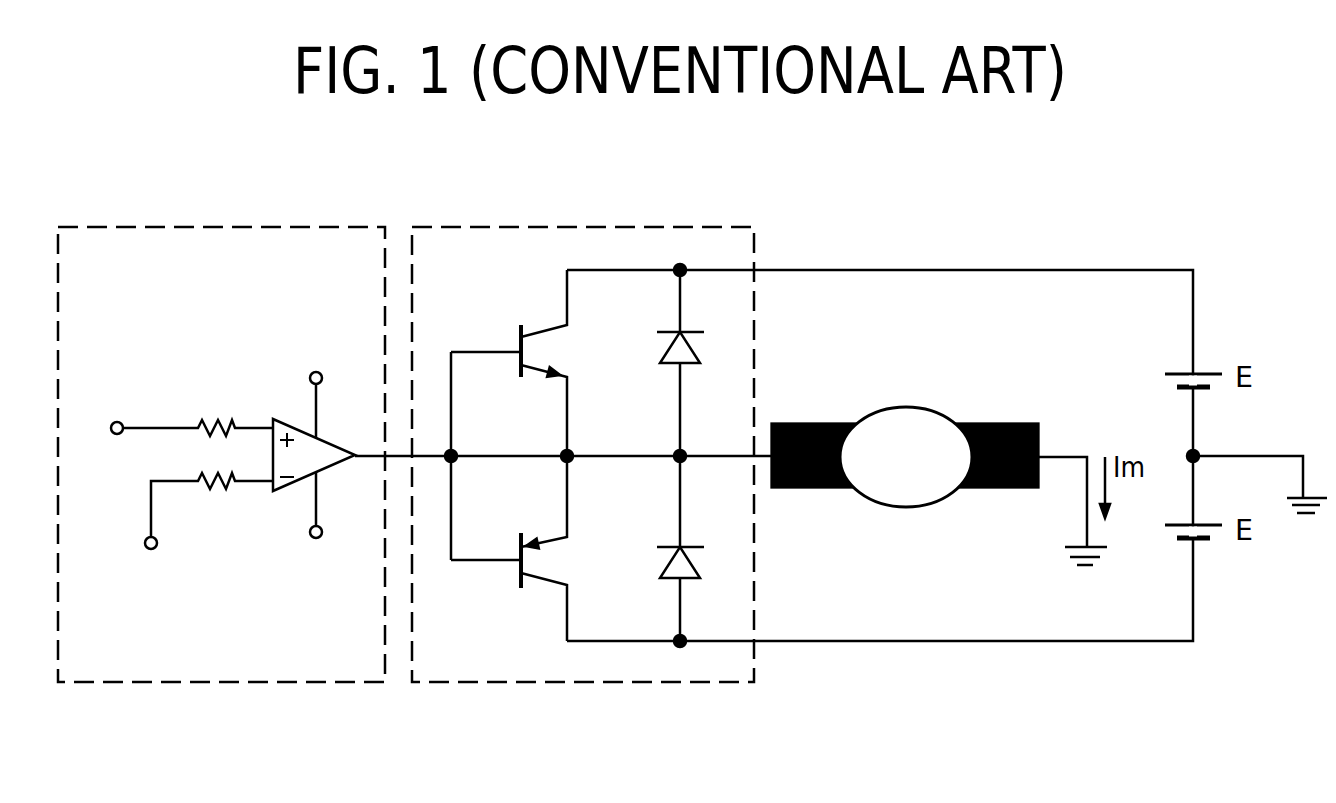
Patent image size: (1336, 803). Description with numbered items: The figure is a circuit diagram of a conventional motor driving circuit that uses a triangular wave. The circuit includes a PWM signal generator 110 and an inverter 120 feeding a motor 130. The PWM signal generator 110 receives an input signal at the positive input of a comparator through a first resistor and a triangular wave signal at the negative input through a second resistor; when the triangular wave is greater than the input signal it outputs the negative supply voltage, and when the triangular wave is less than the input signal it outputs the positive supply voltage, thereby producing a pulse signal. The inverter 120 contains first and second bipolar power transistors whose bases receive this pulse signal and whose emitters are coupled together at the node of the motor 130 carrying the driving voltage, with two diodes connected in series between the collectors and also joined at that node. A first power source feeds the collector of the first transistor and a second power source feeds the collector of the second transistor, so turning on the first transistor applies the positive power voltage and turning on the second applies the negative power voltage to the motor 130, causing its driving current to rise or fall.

The PWM signal generator 110 is at (178, 226).
The inverter 120 is at (638, 227).
The motor 130 is at (905, 407).